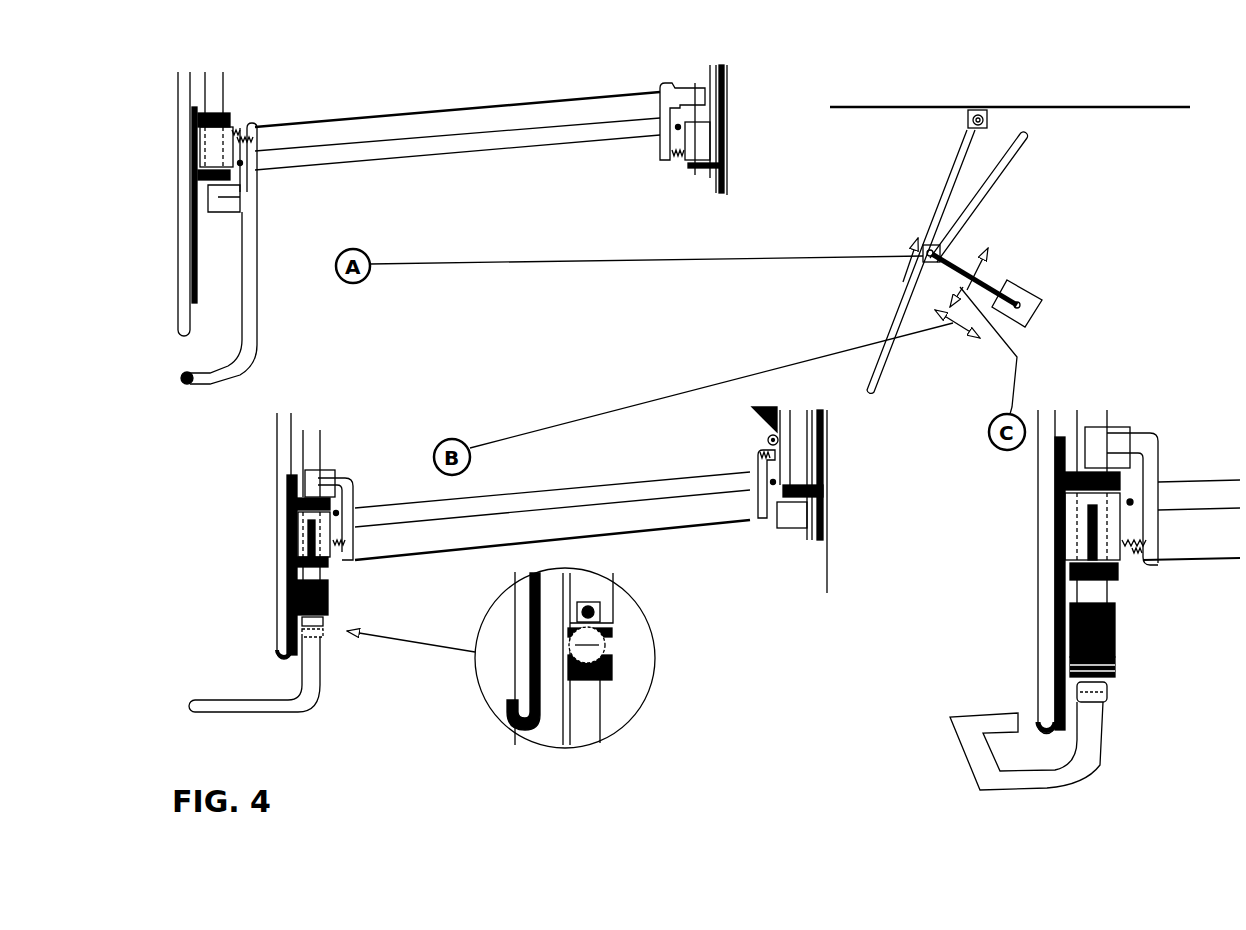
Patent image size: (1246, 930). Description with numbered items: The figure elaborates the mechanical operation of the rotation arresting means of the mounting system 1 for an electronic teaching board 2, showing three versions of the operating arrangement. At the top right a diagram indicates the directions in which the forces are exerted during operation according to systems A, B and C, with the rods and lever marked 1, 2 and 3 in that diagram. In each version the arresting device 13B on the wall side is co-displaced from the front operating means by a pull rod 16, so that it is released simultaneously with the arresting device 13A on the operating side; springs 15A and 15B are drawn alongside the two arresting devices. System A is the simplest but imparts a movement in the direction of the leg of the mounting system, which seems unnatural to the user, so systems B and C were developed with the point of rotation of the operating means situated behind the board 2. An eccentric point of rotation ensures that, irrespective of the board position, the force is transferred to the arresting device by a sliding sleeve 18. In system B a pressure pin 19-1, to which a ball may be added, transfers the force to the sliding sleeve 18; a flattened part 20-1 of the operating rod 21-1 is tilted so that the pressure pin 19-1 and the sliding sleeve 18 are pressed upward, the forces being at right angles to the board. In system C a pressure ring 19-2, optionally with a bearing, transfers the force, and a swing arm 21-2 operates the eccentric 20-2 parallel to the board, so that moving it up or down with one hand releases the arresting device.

The mounting system 1 is at (940, 193).
The electronic teaching board 2 is at (1000, 195).
The drive lever 3 is at (1040, 315).
The arresting device on the operating side 13A is at (263, 200).
The arresting device on the wall side 13B is at (655, 108).
The first spring 15A is at (236, 128).
The second spring 15B is at (676, 162).
The pull rod 16 is at (430, 107).
The sliding sleeve 18 is at (332, 595).
The pressure pin 19-1 is at (606, 612).
The flattened part of operating rod 20-1 is at (609, 645).
The operating rod 21-1 is at (290, 706).
The pressure ring 19-2 is at (1120, 667).
The eccentric 20-2 is at (1112, 687).
The swing arm 21-2 is at (1024, 739).